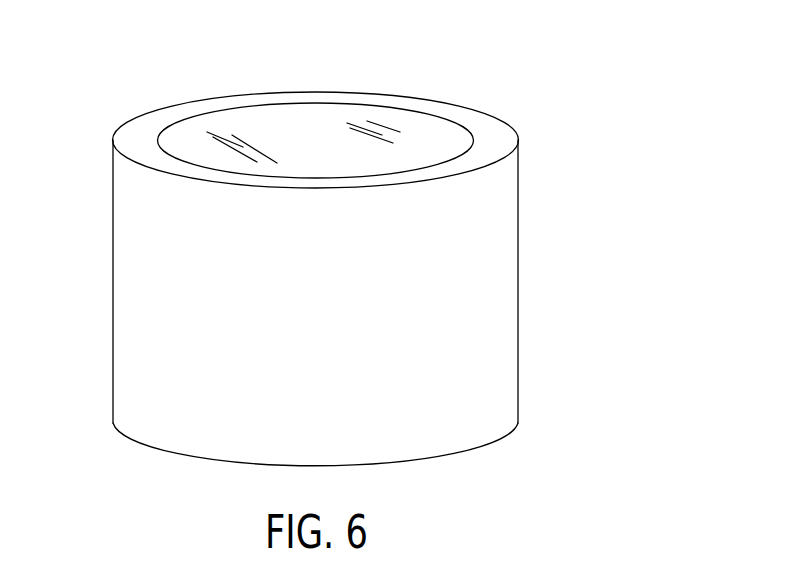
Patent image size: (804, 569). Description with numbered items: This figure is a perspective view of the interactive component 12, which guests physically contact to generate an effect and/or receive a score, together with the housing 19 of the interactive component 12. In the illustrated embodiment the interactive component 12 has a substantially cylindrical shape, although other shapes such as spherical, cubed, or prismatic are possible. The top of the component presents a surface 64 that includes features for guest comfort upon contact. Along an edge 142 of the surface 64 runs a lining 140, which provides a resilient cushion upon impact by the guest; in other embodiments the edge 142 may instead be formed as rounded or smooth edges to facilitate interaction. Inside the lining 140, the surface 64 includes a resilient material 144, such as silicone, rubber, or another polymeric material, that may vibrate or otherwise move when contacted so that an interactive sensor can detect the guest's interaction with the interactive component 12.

The interactive component 12 is at (576, 58).
The housing 19 is at (143, 319).
The surface 64 is at (415, 134).
The lining 140 is at (497, 137).
The edge 142 is at (143, 114).
The resilient material 144 is at (330, 157).